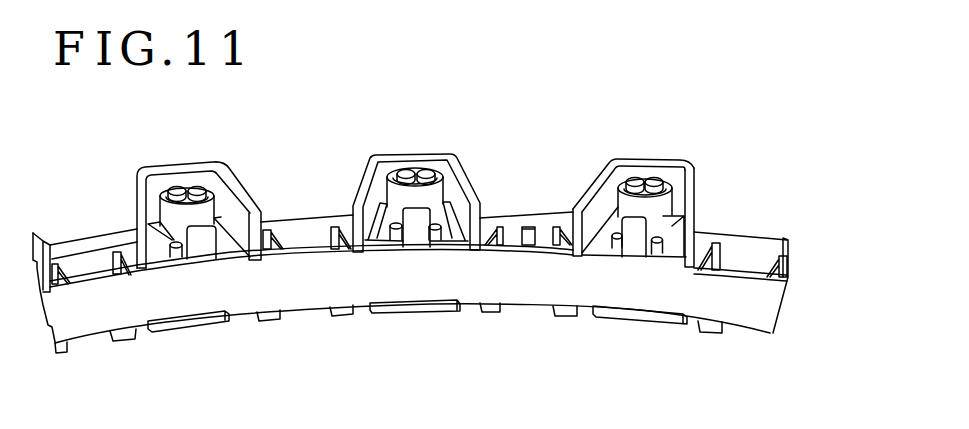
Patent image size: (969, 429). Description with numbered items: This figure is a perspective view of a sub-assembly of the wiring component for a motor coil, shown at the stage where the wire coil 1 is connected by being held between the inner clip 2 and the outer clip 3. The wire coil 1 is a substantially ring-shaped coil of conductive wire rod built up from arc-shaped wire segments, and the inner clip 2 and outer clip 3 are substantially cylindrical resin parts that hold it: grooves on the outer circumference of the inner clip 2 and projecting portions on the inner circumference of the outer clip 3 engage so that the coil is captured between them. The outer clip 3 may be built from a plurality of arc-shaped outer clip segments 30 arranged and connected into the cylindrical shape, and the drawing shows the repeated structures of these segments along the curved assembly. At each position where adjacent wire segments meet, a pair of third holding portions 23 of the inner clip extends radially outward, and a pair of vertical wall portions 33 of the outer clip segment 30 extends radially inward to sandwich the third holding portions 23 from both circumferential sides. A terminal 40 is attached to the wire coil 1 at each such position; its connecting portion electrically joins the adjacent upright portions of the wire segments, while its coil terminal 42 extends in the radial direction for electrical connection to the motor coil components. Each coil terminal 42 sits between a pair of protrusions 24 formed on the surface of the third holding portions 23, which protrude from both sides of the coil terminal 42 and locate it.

The wire coil 1 is at (653, 181).
The inner clip 2 is at (757, 307).
The outer clip 3 is at (738, 235).
The third holding portion 23 is at (620, 208).
The protrusion 24 is at (622, 236).
The outer clip segment 30 is at (640, 242).
The vertical wall portion 33 is at (600, 166).
The terminal 40 is at (622, 208).
The coil terminal 42 is at (633, 243).